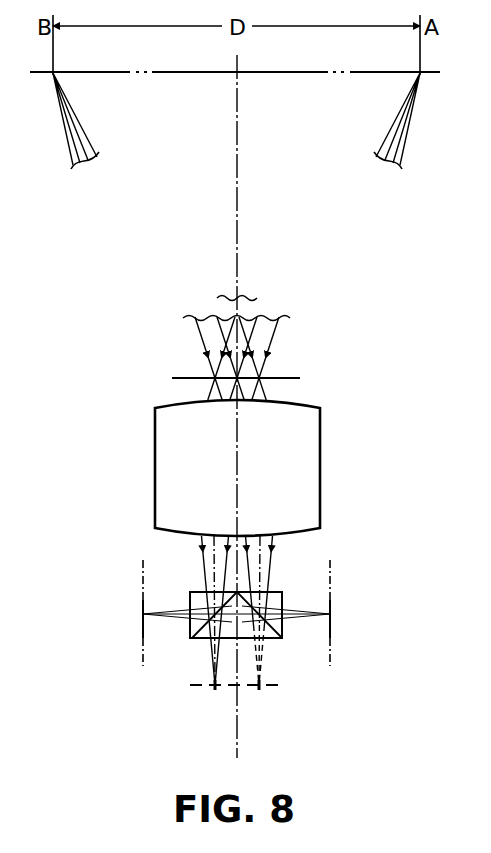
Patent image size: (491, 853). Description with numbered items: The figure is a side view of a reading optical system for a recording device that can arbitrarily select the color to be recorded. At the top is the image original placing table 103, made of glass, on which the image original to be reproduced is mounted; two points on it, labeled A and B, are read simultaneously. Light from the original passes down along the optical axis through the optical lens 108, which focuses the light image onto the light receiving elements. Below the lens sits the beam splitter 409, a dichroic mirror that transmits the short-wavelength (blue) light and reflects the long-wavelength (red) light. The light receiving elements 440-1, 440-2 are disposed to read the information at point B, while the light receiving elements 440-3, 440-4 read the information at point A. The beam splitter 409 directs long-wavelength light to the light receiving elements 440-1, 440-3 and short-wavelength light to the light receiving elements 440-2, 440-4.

The image original placing table 103 is at (374, 72).
The optical lens 108 is at (320, 438).
The beam splitter 409 is at (190, 593).
The light receiving element 440-1 is at (331, 606).
The light receiving element 440-2 is at (273, 686).
The light receiving element 440-3 is at (143, 606).
The light receiving element 440-4 is at (197, 686).